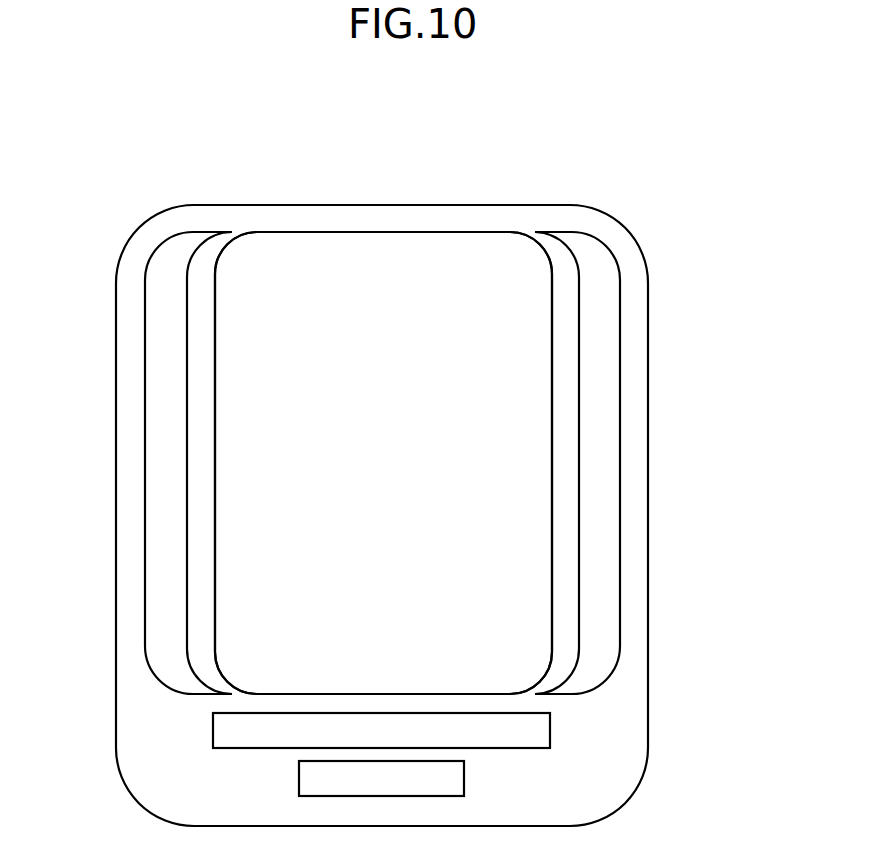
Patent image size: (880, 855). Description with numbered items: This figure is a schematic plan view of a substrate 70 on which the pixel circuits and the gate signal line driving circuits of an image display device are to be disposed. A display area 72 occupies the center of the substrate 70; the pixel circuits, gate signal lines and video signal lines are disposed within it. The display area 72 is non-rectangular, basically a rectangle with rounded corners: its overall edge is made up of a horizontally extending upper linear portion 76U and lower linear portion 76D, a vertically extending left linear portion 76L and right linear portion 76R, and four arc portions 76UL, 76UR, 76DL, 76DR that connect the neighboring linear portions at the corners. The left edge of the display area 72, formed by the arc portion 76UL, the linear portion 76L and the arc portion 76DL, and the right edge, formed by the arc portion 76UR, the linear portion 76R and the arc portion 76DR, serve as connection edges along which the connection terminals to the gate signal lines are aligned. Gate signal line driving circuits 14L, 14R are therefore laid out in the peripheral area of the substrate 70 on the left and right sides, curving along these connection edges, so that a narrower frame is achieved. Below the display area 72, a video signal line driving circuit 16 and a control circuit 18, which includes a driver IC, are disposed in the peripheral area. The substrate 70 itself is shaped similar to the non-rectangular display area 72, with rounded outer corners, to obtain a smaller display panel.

The substrate 70 is at (659, 145).
The display area 72 is at (481, 232).
The gate signal line driving circuit 14L is at (145, 464).
The gate signal line driving circuit 14R is at (620, 464).
The arc portion 76UL is at (227, 244).
The linear portion 76U is at (383, 232).
The arc portion 76UR is at (540, 244).
The linear portion 76L is at (216, 464).
The linear portion 76R is at (552, 464).
The arc portion 76DL is at (227, 682).
The linear portion 76D is at (383, 694).
The arc portion 76DR is at (540, 682).
The video signal line driving circuit 16 is at (550, 730).
The control circuit 18 is at (464, 780).